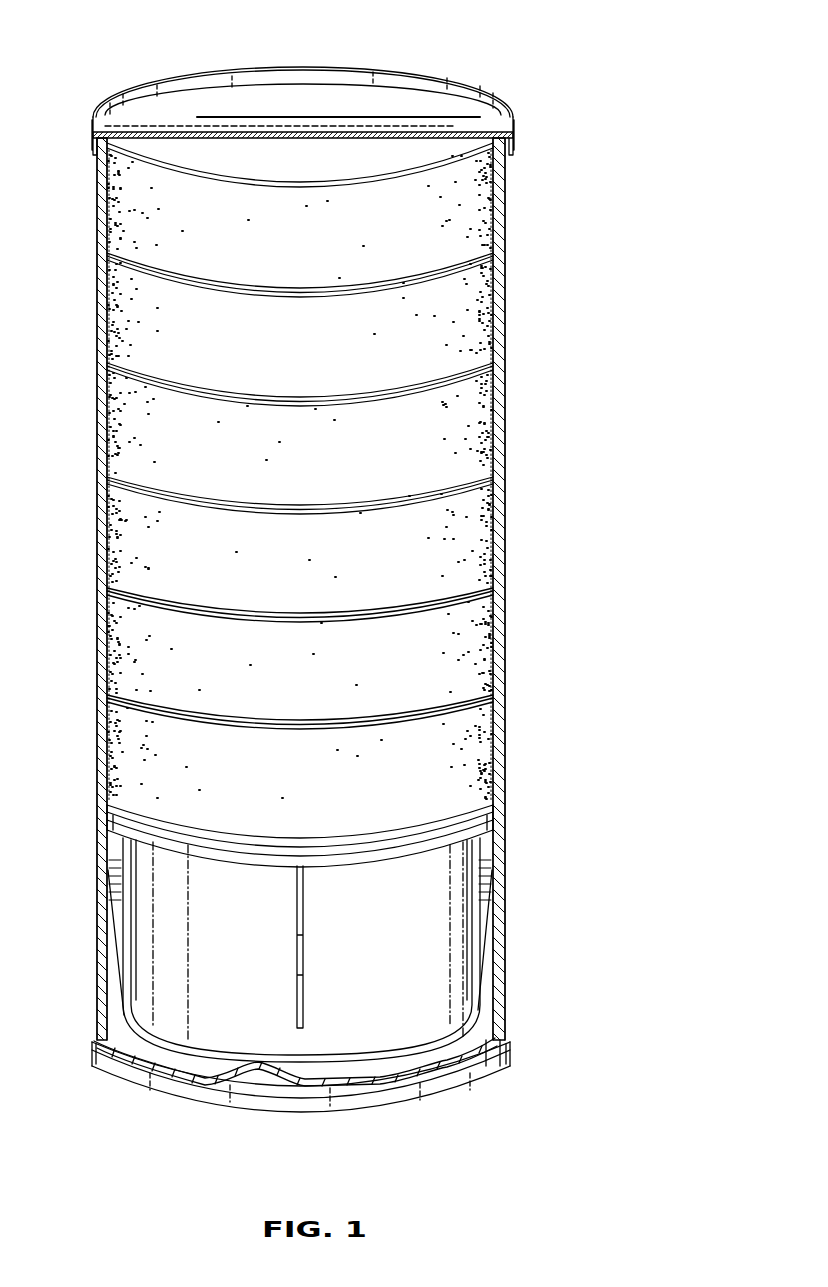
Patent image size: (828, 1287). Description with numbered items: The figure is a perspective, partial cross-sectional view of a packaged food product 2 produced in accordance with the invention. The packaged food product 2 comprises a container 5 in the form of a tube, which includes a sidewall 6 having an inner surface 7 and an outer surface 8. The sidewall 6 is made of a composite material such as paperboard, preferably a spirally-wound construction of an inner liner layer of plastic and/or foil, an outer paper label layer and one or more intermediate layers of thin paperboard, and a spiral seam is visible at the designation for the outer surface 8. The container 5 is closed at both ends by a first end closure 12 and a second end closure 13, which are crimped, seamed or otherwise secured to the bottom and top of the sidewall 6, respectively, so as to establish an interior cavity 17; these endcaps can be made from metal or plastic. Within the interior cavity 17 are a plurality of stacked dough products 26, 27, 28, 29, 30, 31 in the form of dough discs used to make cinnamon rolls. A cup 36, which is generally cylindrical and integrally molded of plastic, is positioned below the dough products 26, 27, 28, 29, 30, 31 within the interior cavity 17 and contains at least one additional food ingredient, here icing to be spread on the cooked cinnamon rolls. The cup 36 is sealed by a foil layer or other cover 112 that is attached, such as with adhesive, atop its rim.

The packaged food product 2 is at (566, 64).
The container 5 is at (507, 252).
The sidewall 6 is at (266, 1075).
The inner surface 7 is at (470, 400).
The outer surface 8 is at (495, 1073).
The first end closure 12 is at (413, 1108).
The second end closure 13 is at (409, 72).
The interior cavity 17 is at (497, 728).
The dough product 26 is at (483, 753).
The dough product 27 is at (483, 618).
The dough product 28 is at (483, 510).
The dough product 29 is at (483, 420).
The dough product 30 is at (483, 308).
The dough product 31 is at (483, 175).
The cup 36 is at (445, 1002).
The cover 112 is at (485, 822).